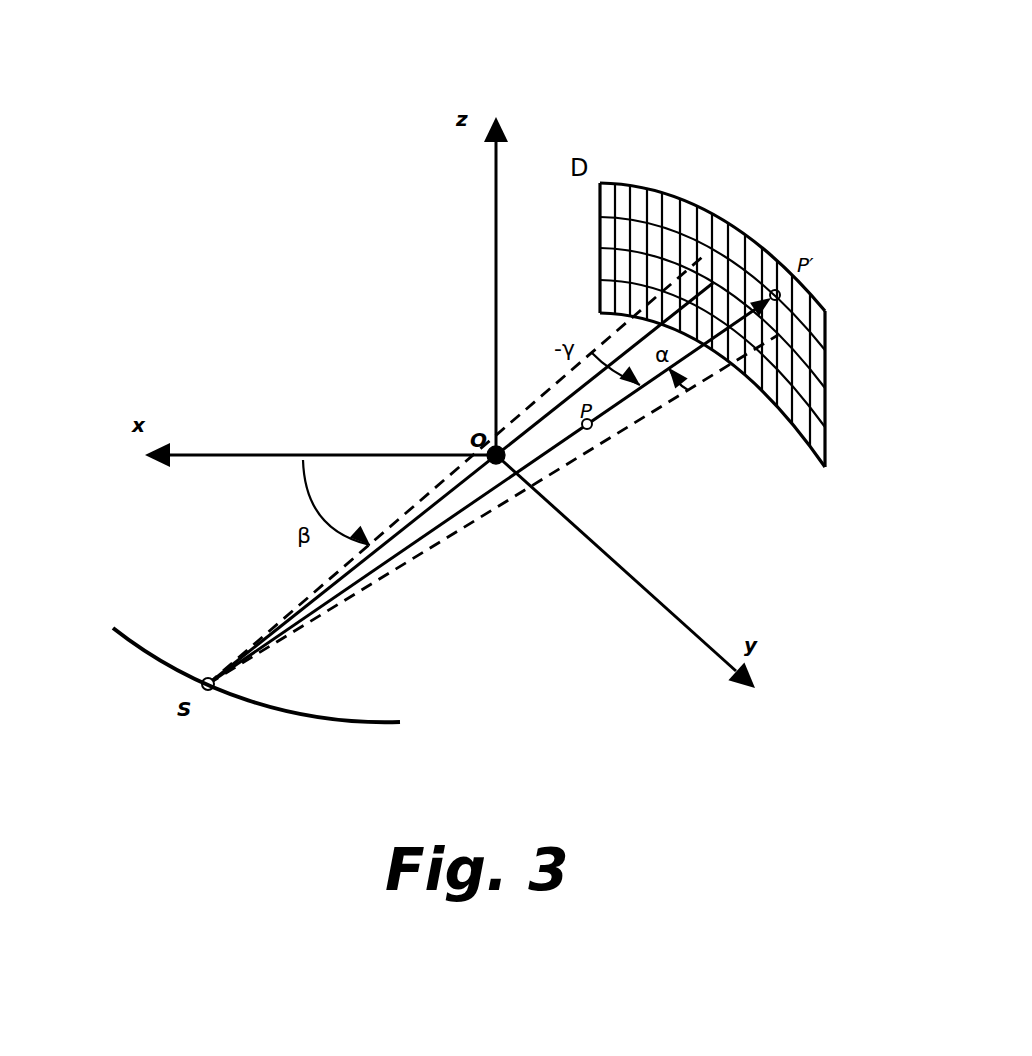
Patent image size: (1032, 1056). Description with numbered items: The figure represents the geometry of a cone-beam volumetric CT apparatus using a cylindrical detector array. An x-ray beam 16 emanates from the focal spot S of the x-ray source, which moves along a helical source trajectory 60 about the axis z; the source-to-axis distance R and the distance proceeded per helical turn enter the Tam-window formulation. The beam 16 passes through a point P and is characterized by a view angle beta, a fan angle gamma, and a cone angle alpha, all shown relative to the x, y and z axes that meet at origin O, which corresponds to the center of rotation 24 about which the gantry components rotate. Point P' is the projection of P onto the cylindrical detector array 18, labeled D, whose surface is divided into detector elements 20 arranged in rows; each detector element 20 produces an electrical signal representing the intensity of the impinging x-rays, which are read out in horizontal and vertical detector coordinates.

The x-ray beam 16 is at (515, 497).
The detector array 18 is at (690, 200).
The detector elements 20 is at (735, 253).
The center of rotation 24 is at (492, 448).
The helical source trajectory 60 is at (343, 725).